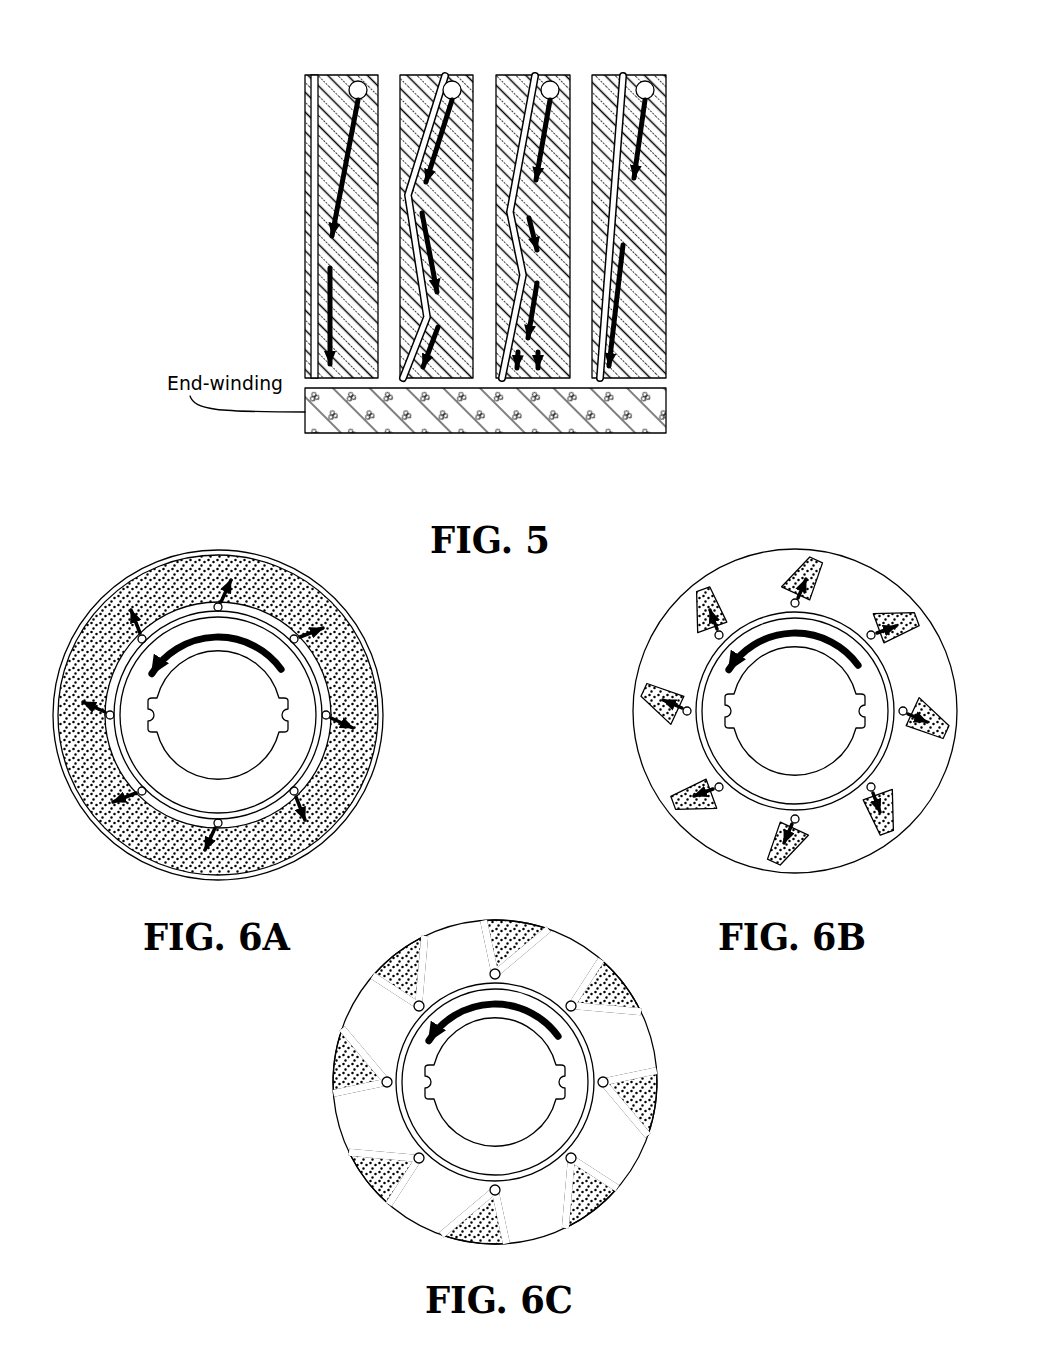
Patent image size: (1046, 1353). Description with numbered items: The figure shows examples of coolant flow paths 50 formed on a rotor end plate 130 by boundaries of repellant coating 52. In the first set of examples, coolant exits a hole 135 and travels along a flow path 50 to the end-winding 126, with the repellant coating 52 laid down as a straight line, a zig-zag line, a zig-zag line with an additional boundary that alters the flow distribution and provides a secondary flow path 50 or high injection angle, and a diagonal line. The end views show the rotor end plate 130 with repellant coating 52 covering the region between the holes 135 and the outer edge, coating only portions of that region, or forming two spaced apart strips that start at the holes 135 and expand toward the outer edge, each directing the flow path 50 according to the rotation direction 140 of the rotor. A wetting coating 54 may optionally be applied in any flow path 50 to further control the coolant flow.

In FIG. 5, the coolant flow path 50 is at (478, 283).
In FIG. 6A, the coolant flow path 50 is at (300, 806).
In FIG. 6B, the coolant flow path 50 is at (794, 719).
In FIG. 6C, the coolant flow path 50 is at (515, 1055).
In FIG. 5, the repellant coating 52 is at (315, 107).
In FIG. 6A, the repellant coating 52 is at (248, 848).
In FIG. 6B, the repellant coating 52 is at (826, 572).
In FIG. 6C, the repellant coating 52 is at (488, 930).
In FIG. 5, the wetting coating 54 is at (318, 305).
In FIG. 6C, the wetting coating 54 is at (510, 935).
In FIG. 5, the end-winding 126 is at (666, 405).
In FIG. 5, the rotor end plate 130 is at (478, 257).
In FIG. 6A, the rotor end plate 130 is at (215, 701).
In FIG. 6B, the rotor end plate 130 is at (794, 691).
In FIG. 6C, the rotor end plate 130 is at (463, 1059).
In FIG. 5, the hole 135 is at (359, 81).
In FIG. 6A, the hole 135 is at (229, 727).
In FIG. 6B, the hole 135 is at (718, 791).
In FIG. 6C, the hole 135 is at (416, 1162).
In FIG. 6A, the rotation direction 140 is at (216, 640).
In FIG. 6B, the rotation direction 140 is at (793, 636).
In FIG. 6C, the rotation direction 140 is at (495, 1007).